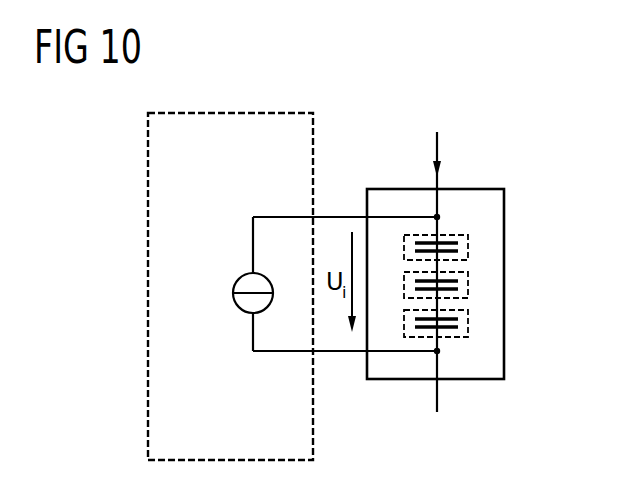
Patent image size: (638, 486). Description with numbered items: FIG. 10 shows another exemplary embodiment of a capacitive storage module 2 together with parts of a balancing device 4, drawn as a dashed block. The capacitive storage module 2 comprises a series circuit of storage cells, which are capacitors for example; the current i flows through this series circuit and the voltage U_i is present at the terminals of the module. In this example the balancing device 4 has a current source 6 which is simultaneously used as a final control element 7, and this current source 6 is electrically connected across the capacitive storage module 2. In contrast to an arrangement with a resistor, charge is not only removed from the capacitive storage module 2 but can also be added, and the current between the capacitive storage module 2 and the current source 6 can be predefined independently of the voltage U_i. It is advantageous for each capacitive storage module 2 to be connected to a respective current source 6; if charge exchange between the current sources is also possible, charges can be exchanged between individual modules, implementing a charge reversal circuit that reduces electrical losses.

The capacitive storage module 2 is at (491, 188).
The balancing device 4 is at (148, 263).
The current source 6 is at (234, 263).
The final control element 7 is at (238, 278).